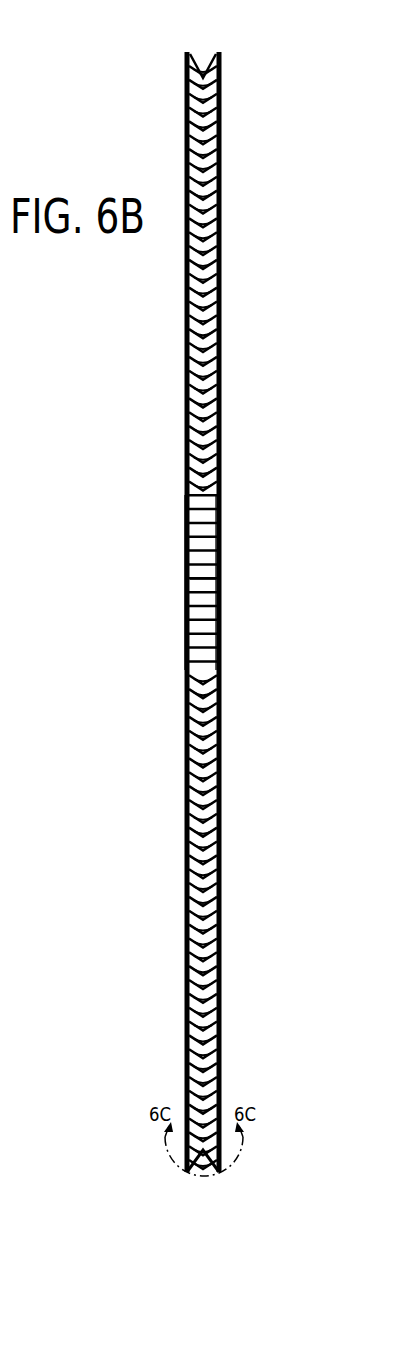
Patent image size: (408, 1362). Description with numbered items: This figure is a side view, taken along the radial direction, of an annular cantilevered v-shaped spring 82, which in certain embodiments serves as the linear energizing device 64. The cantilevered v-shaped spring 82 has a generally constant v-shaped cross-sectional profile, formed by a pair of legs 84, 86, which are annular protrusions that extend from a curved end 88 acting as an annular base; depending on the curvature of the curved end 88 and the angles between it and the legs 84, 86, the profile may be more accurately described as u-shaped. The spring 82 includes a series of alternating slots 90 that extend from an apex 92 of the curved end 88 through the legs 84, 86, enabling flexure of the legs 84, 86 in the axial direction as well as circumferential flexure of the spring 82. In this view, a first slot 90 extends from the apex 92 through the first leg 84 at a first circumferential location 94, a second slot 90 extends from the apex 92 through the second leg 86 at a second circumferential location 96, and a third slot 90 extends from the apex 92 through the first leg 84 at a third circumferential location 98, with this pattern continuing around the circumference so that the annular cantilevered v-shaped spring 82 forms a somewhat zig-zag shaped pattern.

The linear energizing device 64 is at (125, 56).
The annular cantilevered v-shaped spring 82 is at (140, 403).
The first leg 84 is at (185, 55).
The second leg 86 is at (224, 55).
The curved end 88 is at (212, 1152).
The slot 90 is at (190, 540).
The apex 92 is at (206, 76).
The first circumferential location 94 is at (230, 538).
The second circumferential location 96 is at (174, 549).
The third circumferential location 98 is at (230, 574).